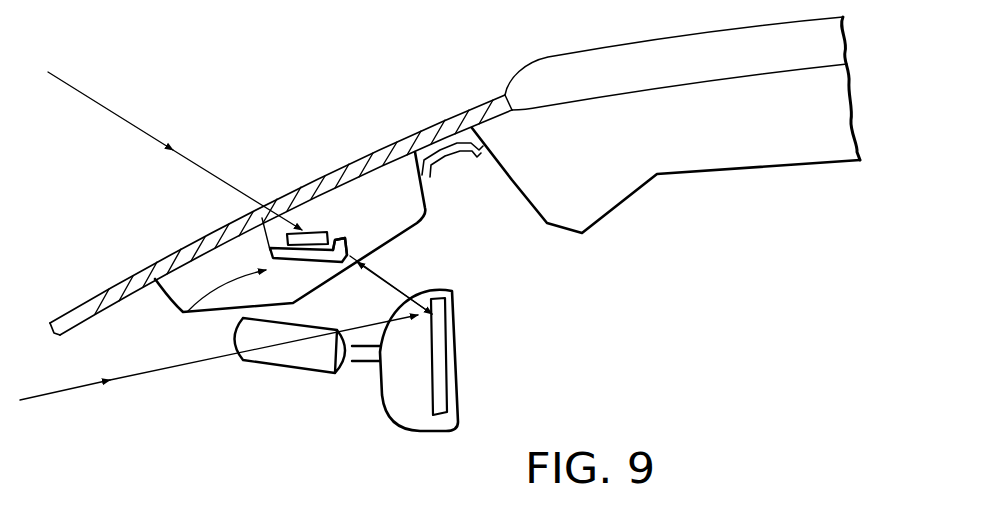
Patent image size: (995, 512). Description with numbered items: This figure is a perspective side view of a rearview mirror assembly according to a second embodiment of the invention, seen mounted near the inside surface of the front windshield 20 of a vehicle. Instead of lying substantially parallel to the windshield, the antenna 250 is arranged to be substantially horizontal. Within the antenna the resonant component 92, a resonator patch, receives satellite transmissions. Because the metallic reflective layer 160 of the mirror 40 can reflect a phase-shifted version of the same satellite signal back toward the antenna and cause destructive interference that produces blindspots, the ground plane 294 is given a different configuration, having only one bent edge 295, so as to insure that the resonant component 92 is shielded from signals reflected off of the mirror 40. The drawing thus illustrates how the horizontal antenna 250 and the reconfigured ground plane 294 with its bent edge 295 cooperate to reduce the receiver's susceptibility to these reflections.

The front windshield 20 is at (162, 268).
The mirror 40 is at (450, 284).
The resonant component 92 is at (316, 232).
The reflective layer 160 is at (436, 353).
The antenna 250 is at (181, 311).
The ground plane 294 is at (268, 249).
The bent edge 295 is at (349, 239).